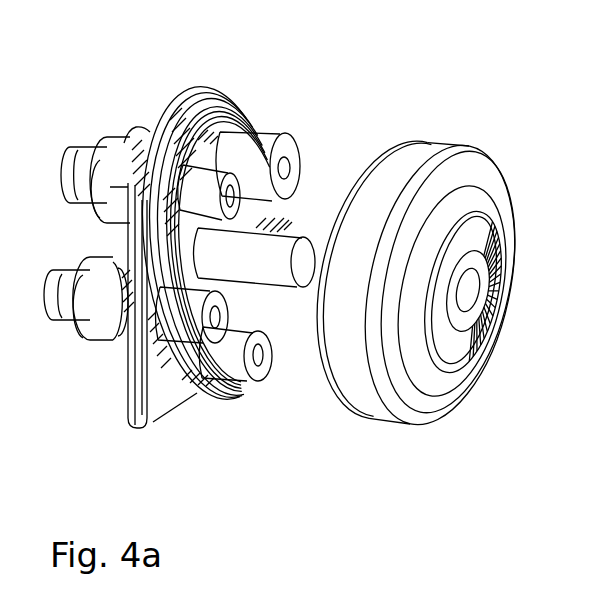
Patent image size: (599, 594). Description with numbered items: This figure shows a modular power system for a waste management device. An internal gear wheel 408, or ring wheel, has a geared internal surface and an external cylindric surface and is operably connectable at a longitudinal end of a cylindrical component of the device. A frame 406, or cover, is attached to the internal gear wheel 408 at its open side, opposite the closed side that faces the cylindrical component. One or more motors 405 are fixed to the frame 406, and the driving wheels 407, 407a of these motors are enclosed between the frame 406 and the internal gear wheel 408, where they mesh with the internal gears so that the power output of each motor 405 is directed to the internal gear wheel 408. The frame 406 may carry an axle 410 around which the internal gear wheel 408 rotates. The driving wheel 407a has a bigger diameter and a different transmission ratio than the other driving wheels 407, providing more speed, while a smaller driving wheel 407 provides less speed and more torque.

The motor 405 is at (114, 178).
The frame 406 is at (152, 400).
The driving wheel 407 is at (207, 184).
The driving wheel 407a is at (263, 142).
The internal gear wheel 408 is at (350, 374).
The axle 410 is at (275, 263).